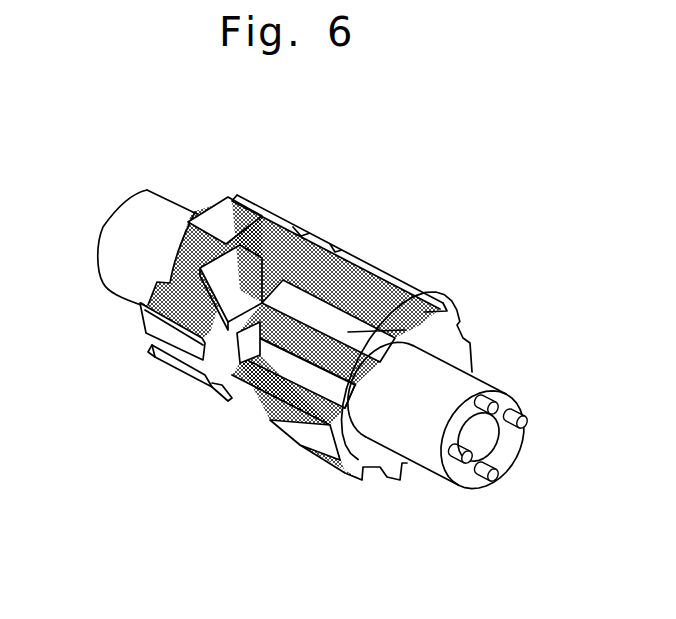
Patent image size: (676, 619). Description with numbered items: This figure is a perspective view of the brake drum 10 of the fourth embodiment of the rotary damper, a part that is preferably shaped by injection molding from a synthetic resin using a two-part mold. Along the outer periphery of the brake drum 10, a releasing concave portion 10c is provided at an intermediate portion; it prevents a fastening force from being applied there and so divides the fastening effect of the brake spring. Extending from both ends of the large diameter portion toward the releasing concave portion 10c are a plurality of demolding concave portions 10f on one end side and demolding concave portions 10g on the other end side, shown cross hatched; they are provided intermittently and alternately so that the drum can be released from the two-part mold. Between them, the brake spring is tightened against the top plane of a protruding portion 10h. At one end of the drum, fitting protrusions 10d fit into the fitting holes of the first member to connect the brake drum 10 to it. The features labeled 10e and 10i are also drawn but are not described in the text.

The brake drum 10 is at (209, 457).
The releasing concave portion 10c is at (273, 260).
The fitting protrusions 10d is at (497, 480).
The hub / bearing bore 10e is at (480, 437).
The demolding concave portions 10f is at (197, 245).
The demolding concave portions 10g is at (405, 291).
The protruding portion 10h is at (187, 277).
The core end face 10i is at (348, 332).